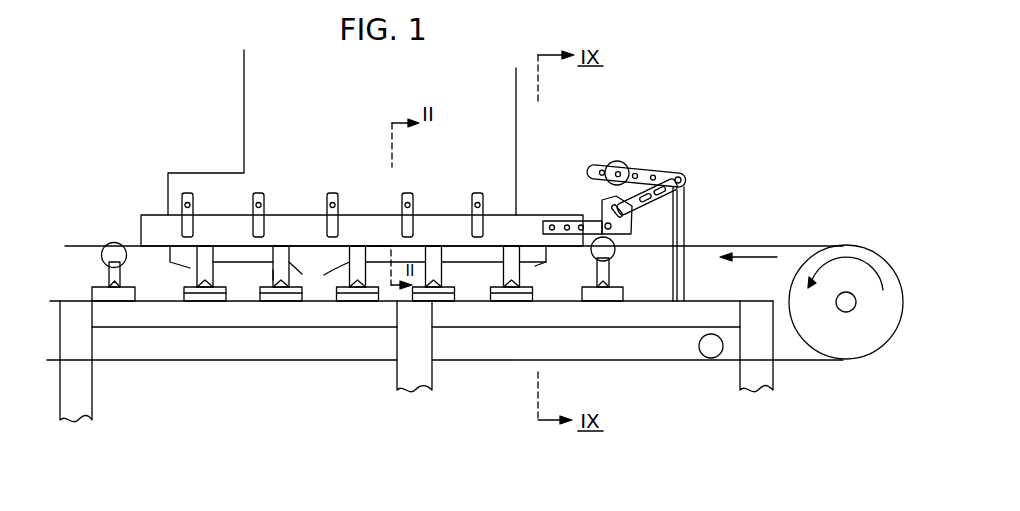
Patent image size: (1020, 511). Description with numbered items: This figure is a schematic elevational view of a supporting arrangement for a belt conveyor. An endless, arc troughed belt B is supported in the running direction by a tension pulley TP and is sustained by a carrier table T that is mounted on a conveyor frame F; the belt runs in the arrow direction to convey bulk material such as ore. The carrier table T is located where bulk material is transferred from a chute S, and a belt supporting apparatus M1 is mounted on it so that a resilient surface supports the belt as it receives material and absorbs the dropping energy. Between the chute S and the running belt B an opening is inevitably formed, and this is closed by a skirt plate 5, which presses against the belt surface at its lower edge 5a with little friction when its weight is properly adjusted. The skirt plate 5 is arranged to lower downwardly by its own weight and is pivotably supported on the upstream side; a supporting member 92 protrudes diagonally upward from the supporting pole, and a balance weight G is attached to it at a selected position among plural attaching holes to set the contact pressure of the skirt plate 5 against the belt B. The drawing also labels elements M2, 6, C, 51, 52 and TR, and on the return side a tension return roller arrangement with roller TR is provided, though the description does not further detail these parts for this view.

The chute S is at (498, 133).
The belt B is at (757, 245).
The conveyor frame F is at (340, 318).
The skirt plate 5 is at (302, 230).
The lower edge of skirt plate 5a is at (378, 237).
The second motion direction M2 is at (435, 228).
The pins 6 is at (263, 200).
The carrier table T is at (358, 273).
The belt supporting apparatus M1 is at (245, 272).
The rollers C is at (113, 243).
The link bar 51 is at (552, 220).
The rocker member 52 is at (582, 235).
The supporting member 92 is at (656, 169).
The balance weight G is at (617, 161).
The tension pulley TP is at (848, 258).
The tension roller TR is at (714, 358).